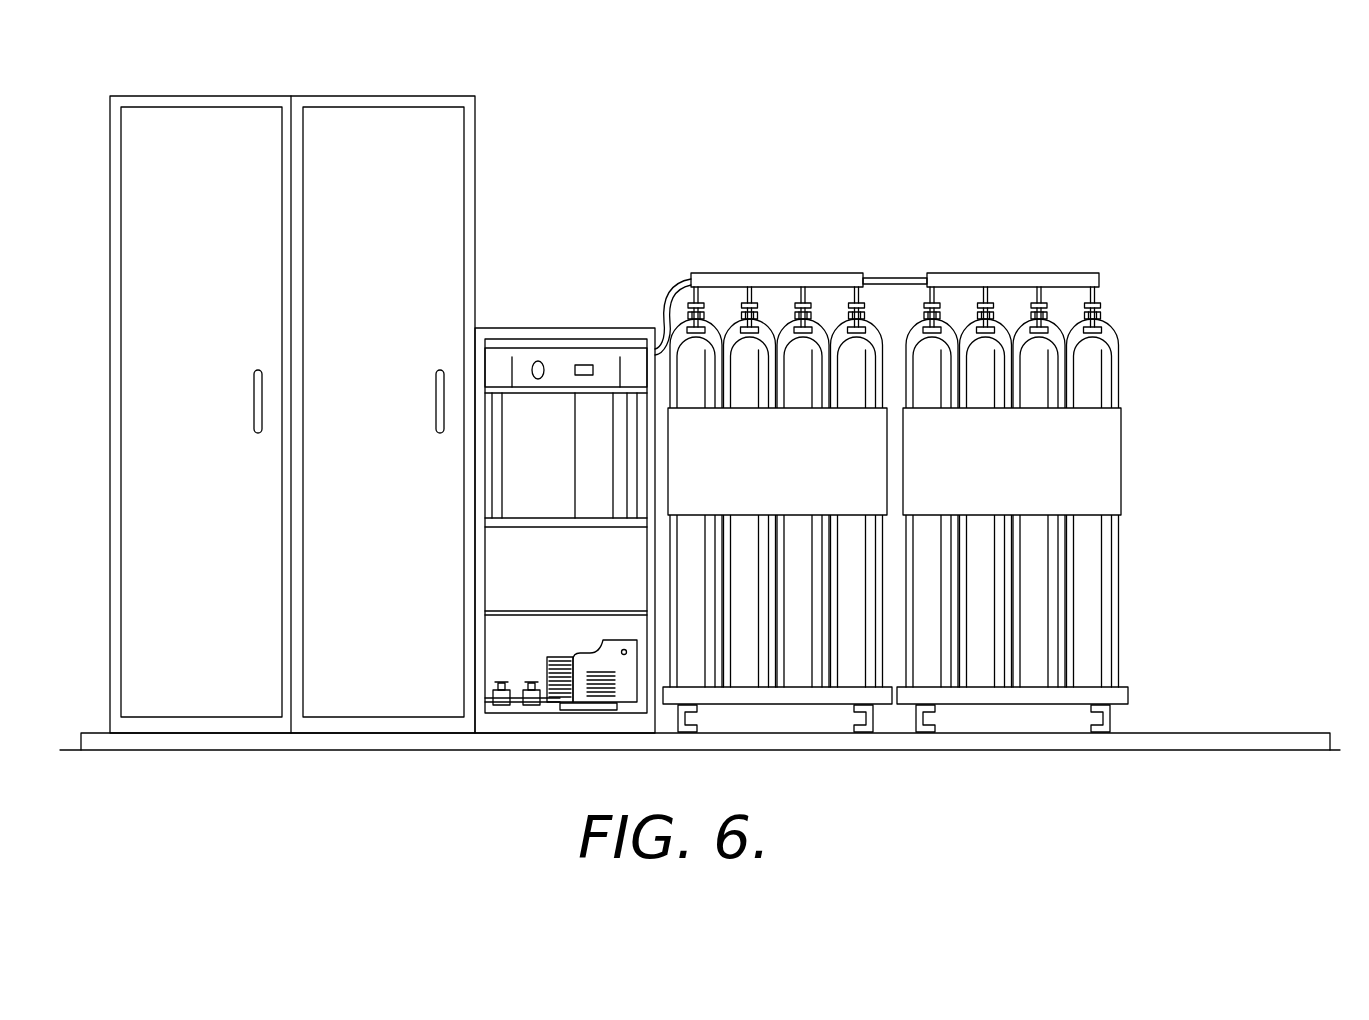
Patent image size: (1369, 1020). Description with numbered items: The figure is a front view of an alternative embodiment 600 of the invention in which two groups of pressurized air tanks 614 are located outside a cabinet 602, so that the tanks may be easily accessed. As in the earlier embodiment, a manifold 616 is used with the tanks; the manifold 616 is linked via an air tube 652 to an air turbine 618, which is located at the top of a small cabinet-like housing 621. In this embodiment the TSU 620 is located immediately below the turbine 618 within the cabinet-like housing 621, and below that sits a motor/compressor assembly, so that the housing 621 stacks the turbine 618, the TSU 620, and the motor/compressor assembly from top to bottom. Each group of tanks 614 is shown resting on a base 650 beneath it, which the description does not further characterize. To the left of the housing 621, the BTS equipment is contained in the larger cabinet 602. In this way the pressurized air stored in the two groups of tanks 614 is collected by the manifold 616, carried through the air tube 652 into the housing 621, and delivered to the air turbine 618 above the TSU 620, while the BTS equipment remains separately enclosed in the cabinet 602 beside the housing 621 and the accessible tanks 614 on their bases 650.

The alternative embodiment 600 is at (892, 202).
The cabinet 602 is at (405, 150).
The pressurized air tanks 614 is at (1023, 343).
The manifold 616 is at (780, 274).
The air turbine 618 is at (528, 357).
The TSU 620 is at (557, 460).
The cabinet-like housing 621 is at (588, 322).
The pallet 650 is at (850, 713).
The air tube 652 is at (667, 298).